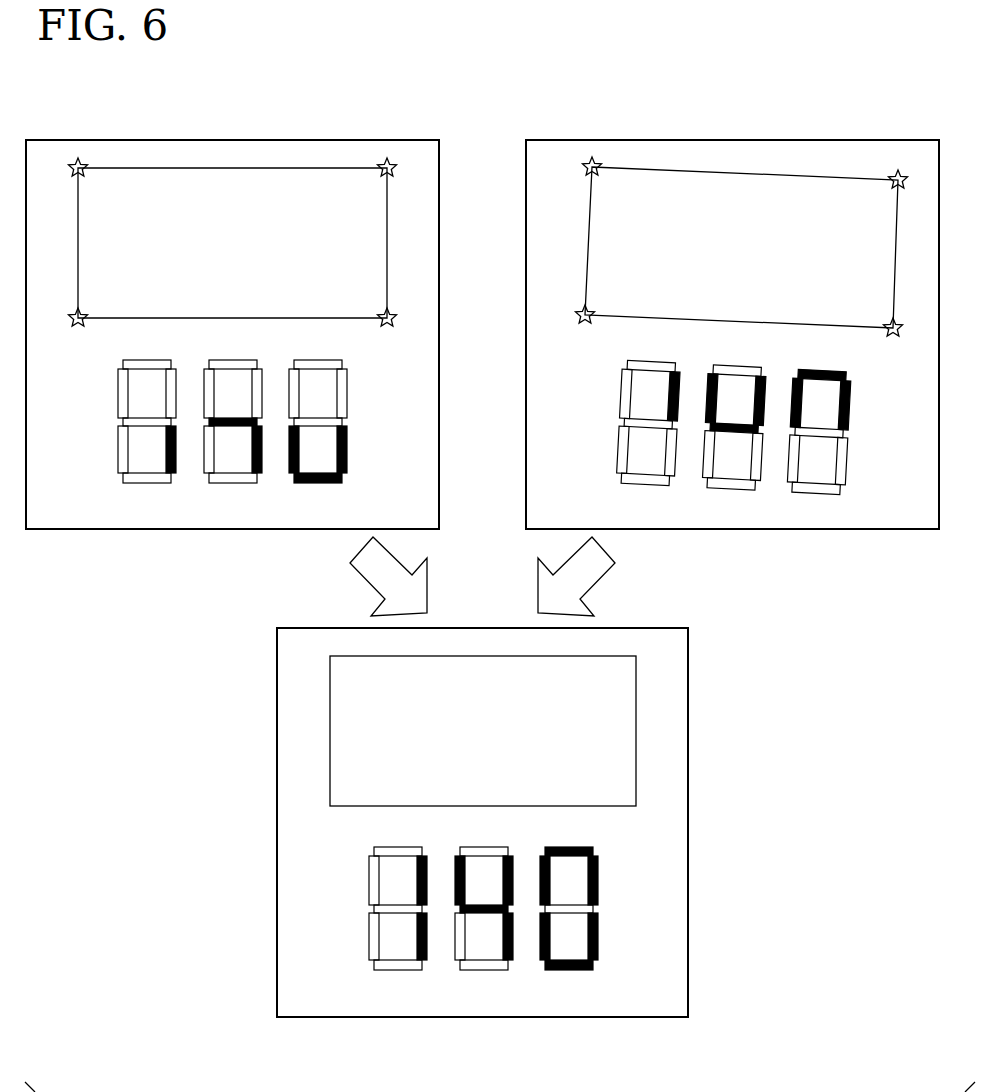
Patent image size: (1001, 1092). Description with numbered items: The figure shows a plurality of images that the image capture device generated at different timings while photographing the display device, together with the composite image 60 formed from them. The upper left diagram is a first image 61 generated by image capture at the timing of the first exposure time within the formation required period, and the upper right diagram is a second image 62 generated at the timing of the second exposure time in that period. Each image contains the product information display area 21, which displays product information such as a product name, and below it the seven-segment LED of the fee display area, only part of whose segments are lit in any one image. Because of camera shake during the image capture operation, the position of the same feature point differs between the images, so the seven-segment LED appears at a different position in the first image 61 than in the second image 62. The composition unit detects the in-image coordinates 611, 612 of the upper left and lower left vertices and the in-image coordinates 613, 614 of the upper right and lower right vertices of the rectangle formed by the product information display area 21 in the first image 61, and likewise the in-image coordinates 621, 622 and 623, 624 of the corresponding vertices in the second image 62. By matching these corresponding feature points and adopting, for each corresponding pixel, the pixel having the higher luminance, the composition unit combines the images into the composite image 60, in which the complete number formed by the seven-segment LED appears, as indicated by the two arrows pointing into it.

The composite image 60 is at (625, 628).
The first image 61 is at (265, 140).
The second image 62 is at (785, 140).
The product information display area 21 is at (183, 185).
The in-image coordinates 611 is at (76, 158).
The in-image coordinates 612 is at (78, 328).
The in-image coordinates 613 is at (385, 158).
The in-image coordinates 614 is at (387, 328).
The in-image coordinates 621 is at (588, 157).
The in-image coordinates 622 is at (584, 325).
The in-image coordinates 623 is at (899, 170).
The in-image coordinates 624 is at (893, 338).